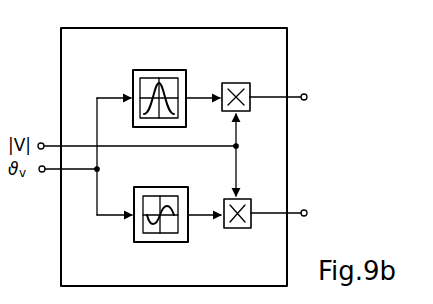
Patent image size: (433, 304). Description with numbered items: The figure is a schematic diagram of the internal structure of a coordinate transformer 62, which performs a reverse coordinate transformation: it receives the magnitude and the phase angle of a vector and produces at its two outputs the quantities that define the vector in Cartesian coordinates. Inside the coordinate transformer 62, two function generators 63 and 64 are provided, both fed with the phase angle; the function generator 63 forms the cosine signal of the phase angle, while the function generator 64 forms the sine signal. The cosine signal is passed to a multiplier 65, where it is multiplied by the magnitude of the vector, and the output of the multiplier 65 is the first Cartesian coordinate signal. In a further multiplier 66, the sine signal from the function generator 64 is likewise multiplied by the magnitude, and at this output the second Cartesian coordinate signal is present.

The coordinate transformer 62 is at (72, 47).
The function generator 63 is at (186, 76).
The function generator 64 is at (188, 194).
The multiplier 65 is at (245, 82).
The further multiplier 66 is at (247, 199).